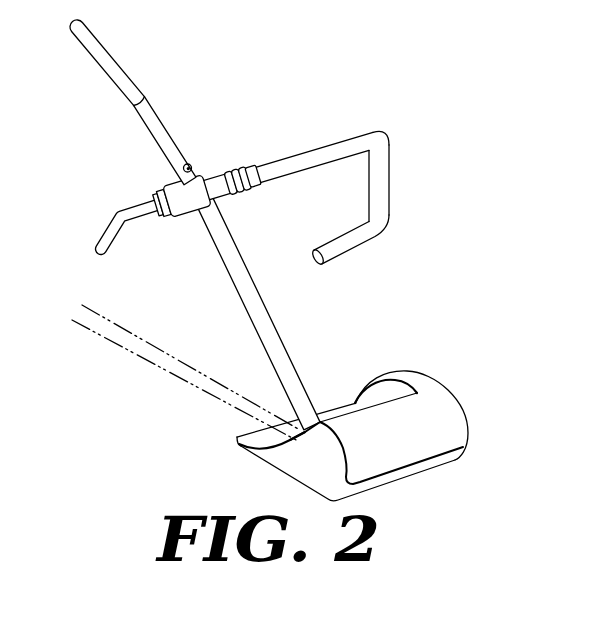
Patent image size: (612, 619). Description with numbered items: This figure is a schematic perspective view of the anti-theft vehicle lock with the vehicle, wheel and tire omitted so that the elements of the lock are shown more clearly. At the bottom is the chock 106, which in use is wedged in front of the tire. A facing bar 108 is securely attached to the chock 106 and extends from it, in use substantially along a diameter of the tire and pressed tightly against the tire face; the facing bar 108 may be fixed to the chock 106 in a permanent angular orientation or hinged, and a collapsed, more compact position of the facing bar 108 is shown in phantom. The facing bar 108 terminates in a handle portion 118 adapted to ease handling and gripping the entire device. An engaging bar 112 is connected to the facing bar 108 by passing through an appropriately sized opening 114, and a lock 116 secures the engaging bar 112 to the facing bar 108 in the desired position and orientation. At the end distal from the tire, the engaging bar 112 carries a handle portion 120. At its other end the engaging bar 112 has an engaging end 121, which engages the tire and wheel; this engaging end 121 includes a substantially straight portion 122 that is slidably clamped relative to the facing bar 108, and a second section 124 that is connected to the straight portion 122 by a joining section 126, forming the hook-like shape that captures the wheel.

The chock 106 is at (419, 466).
The facing bar 108 is at (277, 342).
The engaging bar 112 is at (329, 178).
The opening 114 is at (163, 194).
The lock 116 is at (192, 164).
The handle portion 118 is at (113, 62).
The handle portion 120 is at (109, 229).
The engaging end 121 is at (395, 133).
The straight portion 122 is at (295, 162).
The second section 124 is at (352, 247).
The joining section 126 is at (384, 186).